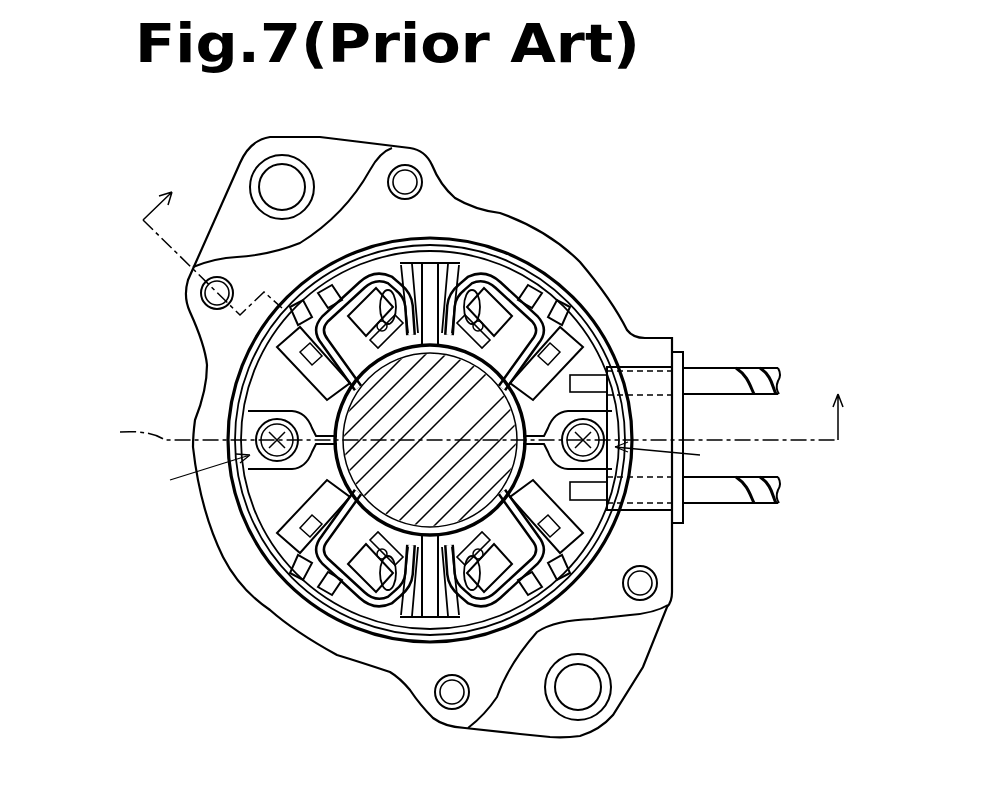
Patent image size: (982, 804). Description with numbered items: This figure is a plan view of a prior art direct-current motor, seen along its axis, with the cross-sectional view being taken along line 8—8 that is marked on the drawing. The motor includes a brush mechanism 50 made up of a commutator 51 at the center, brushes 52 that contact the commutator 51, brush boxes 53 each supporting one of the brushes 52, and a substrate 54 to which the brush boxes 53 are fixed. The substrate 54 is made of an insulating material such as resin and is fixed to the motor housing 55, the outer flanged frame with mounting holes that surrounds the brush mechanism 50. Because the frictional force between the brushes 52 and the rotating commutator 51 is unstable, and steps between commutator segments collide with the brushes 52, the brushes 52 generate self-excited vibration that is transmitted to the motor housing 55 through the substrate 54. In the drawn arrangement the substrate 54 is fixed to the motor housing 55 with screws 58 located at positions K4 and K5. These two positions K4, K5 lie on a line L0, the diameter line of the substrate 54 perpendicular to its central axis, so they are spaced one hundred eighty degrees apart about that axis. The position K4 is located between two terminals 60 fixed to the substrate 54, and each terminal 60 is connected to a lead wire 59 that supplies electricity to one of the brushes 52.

The line 8— 8 is at (495, 303).
The brush mechanism 50 is at (560, 297).
The commutator 51 is at (273, 513).
The brushes 52 is at (374, 362).
The brush boxes 53 is at (275, 330).
The substrate 54 is at (223, 557).
The motor housing 55 is at (667, 602).
The screws 58 is at (228, 440).
The lead wire 59 is at (758, 370).
The terminals 60 is at (598, 345).
The position K4 is at (674, 455).
The position K5 is at (190, 476).
The line L0 is at (444, 436).